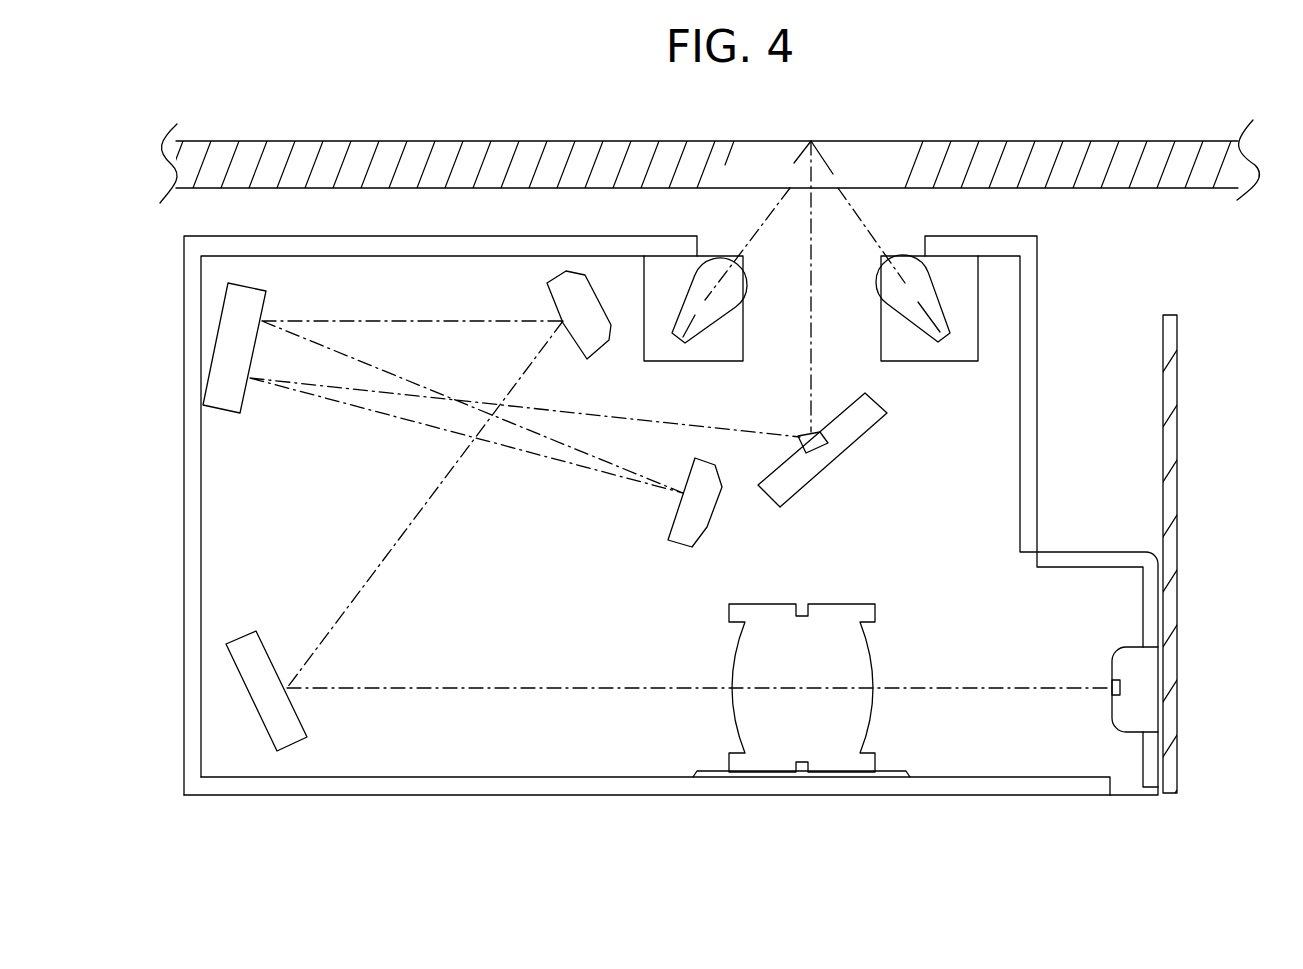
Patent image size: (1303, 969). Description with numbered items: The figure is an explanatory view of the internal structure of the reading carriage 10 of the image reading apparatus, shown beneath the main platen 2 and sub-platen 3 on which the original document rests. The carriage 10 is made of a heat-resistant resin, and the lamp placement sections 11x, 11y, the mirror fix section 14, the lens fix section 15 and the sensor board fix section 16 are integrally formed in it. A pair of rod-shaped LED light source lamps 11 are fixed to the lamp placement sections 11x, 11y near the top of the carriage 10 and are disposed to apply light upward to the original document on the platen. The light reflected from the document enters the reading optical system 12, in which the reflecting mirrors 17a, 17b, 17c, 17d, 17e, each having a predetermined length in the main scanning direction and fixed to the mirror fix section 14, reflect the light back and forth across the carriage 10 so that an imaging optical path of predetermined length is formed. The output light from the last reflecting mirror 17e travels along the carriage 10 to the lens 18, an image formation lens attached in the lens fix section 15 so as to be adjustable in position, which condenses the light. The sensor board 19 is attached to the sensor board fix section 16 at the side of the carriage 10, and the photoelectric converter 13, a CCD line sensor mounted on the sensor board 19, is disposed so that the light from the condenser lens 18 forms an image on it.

The main platen 2 is at (600, 141).
The sub-platen 3 is at (710, 127).
The carriage 10 is at (660, 797).
The light source lamp 11 is at (733, 308).
The lamp placement section 11x is at (705, 362).
The lamp placement section 11y is at (950, 362).
The reading optical system 12 is at (505, 473).
The photoelectric converter 13 is at (1132, 652).
The mirror fix section 14 is at (417, 761).
The lens fix section 15 is at (897, 770).
The sensor board fix section 16 is at (1143, 765).
The reflecting mirror 17a is at (850, 450).
The reflecting mirror 17b is at (218, 407).
The reflecting mirror 17c is at (710, 528).
The reflecting mirror 17d is at (568, 302).
The reflecting mirror 17e is at (247, 630).
The lens 18 is at (857, 602).
The sensor board 19 is at (1175, 440).